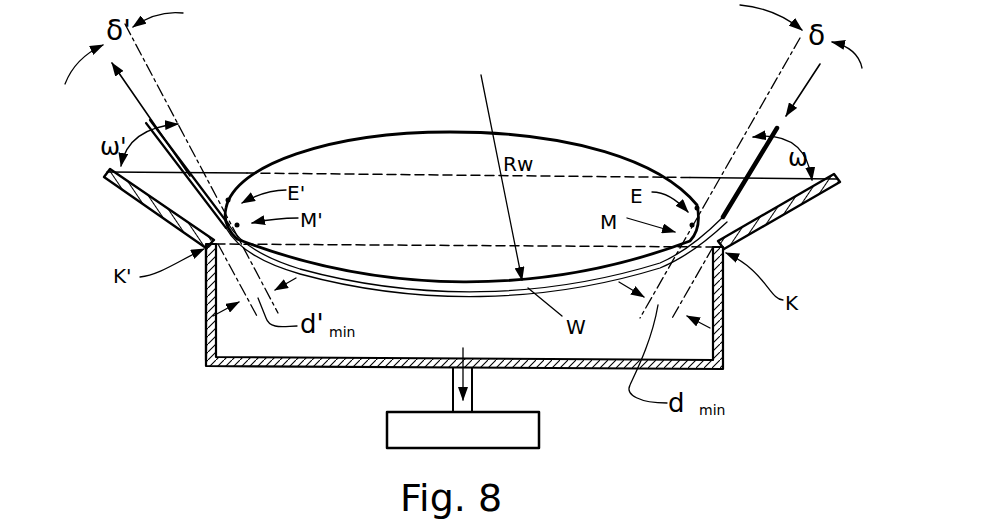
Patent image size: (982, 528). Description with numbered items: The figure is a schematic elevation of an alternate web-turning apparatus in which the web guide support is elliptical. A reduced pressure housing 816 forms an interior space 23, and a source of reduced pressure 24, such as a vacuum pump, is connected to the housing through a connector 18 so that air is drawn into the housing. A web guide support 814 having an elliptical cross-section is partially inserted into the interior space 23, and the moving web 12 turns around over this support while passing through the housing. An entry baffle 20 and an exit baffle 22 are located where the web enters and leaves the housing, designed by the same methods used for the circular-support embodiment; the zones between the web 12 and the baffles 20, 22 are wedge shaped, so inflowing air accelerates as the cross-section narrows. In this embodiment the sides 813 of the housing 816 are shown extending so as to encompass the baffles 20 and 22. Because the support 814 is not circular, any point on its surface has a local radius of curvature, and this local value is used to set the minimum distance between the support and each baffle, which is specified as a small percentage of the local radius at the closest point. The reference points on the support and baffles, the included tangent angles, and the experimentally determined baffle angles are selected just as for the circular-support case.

The moving web 12 is at (150, 126).
The connector 18 is at (453, 393).
The entry baffle 20 is at (773, 230).
The exit baffle 22 is at (137, 200).
The interior space 23 is at (447, 338).
The source of reduced pressure 24 is at (541, 426).
The housing sides 813 is at (699, 178).
The web guide support 814 is at (408, 128).
The reduced pressure housing 816 is at (205, 333).